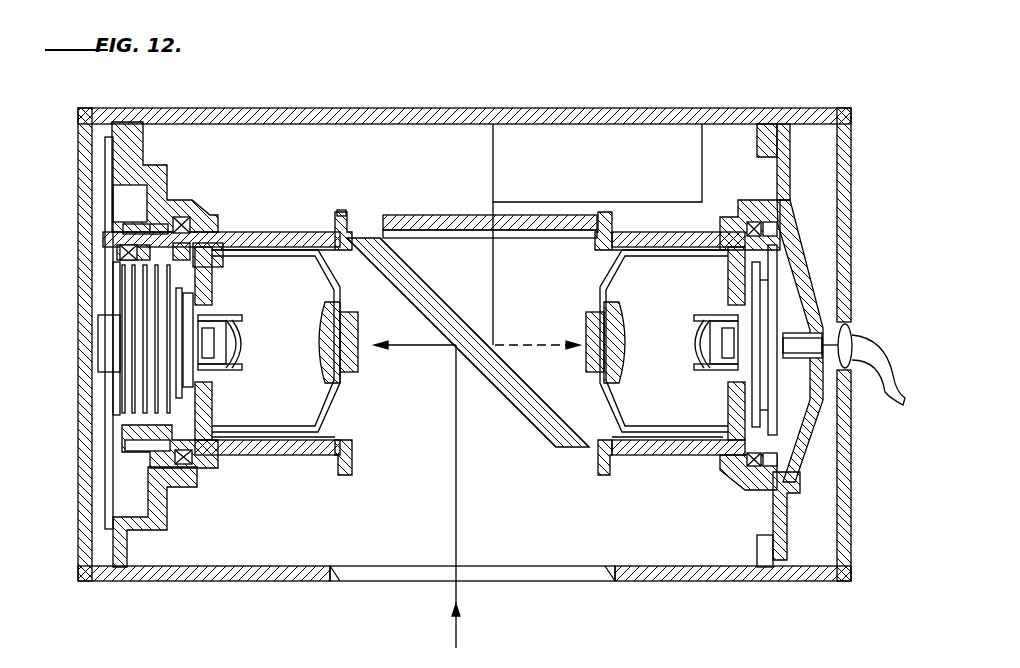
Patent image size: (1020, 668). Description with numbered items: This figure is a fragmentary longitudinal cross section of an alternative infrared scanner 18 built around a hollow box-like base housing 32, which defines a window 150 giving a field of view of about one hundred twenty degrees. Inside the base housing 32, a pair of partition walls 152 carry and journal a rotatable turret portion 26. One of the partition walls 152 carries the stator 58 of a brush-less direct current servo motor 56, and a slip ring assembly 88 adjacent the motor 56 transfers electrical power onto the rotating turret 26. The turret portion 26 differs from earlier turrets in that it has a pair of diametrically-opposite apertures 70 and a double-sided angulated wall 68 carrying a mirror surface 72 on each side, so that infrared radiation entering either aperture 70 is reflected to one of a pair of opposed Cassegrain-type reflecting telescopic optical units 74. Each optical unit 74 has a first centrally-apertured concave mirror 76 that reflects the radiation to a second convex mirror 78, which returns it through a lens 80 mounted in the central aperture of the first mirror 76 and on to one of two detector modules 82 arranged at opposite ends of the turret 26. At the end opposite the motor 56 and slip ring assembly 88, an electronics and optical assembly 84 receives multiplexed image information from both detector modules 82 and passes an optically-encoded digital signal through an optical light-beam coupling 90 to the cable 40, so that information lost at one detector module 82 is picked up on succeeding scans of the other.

The scanner 18 is at (604, 92).
The turret portion 26 is at (343, 202).
The base housing 32 is at (676, 572).
The cable 40 is at (891, 390).
The brush-less direct current servo motor 56 is at (110, 233).
The stator 58 is at (144, 224).
The double-sided angulated wall 68 is at (534, 412).
The apertures 70 is at (392, 216).
The mirror surface 72 is at (402, 305).
The Cassegrain-type reflecting telescopic optical units 74 is at (265, 418).
The first centrally-apertured concave mirror 76 is at (208, 418).
The second convex mirror 78 is at (323, 381).
The lens 80 is at (247, 330).
The detector modules 82 is at (220, 300).
The electronics and optical assembly 84 is at (801, 287).
The slip ring assembly 88 is at (108, 415).
The optical light-beam coupling 90 is at (851, 310).
The window 150 is at (336, 570).
The partition walls 152 is at (113, 551).